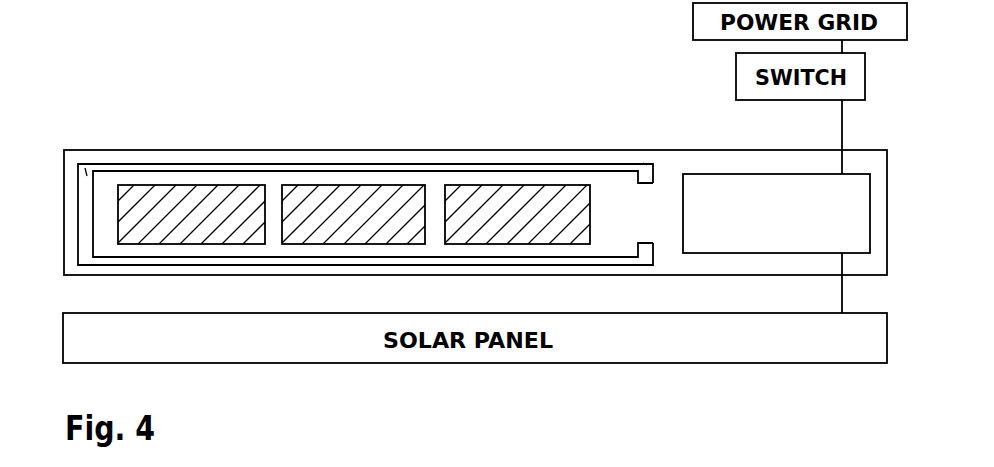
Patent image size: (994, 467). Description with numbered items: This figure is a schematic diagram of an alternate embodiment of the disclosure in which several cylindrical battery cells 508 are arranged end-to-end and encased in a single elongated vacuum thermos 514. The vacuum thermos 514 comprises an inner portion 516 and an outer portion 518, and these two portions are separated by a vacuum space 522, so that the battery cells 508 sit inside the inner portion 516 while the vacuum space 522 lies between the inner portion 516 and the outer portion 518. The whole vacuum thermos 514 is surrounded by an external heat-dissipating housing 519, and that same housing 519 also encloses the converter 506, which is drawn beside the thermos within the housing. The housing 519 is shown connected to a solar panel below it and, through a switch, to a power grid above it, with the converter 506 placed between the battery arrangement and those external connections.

The converter 506 is at (737, 232).
The cylindrical battery cells 508 is at (518, 210).
The vacuum thermos 514 is at (255, 160).
The inner portion 516 is at (611, 262).
The outer portion 518 is at (576, 164).
The external heat-dissipating housing 519 is at (140, 275).
The vacuum space 522 is at (87, 175).